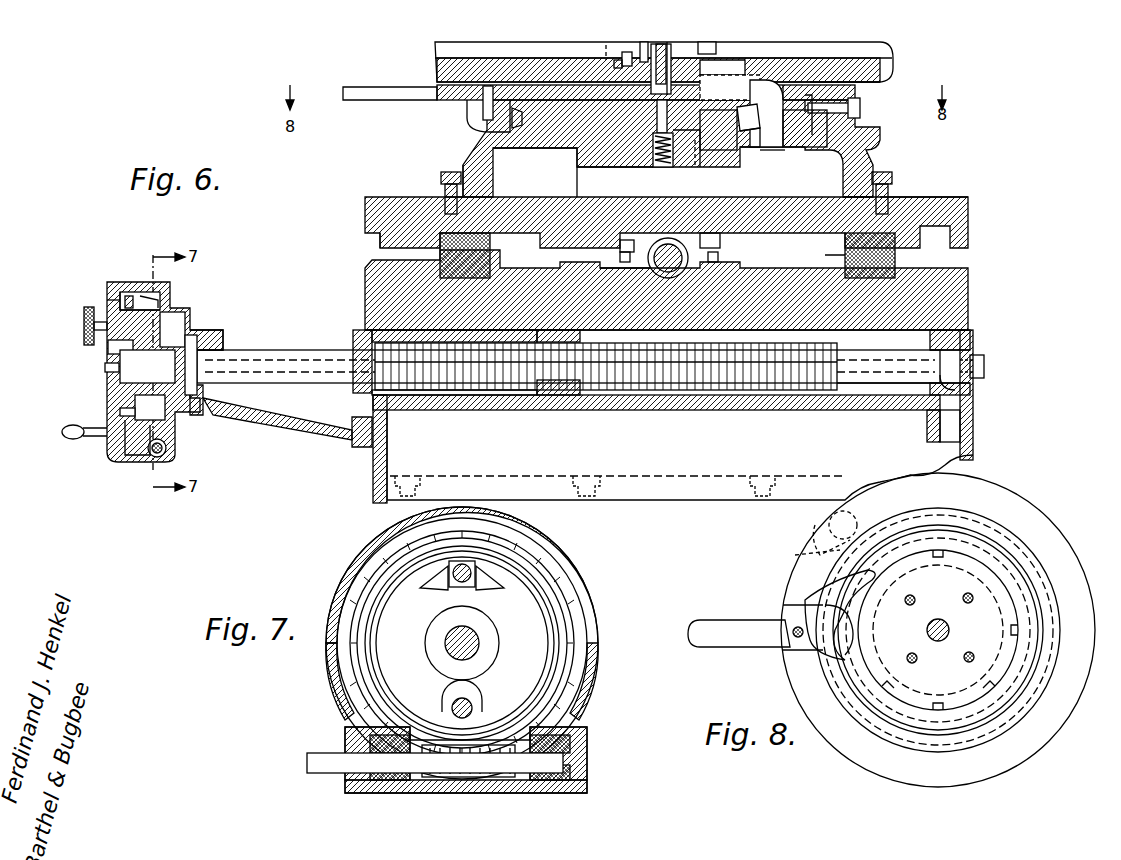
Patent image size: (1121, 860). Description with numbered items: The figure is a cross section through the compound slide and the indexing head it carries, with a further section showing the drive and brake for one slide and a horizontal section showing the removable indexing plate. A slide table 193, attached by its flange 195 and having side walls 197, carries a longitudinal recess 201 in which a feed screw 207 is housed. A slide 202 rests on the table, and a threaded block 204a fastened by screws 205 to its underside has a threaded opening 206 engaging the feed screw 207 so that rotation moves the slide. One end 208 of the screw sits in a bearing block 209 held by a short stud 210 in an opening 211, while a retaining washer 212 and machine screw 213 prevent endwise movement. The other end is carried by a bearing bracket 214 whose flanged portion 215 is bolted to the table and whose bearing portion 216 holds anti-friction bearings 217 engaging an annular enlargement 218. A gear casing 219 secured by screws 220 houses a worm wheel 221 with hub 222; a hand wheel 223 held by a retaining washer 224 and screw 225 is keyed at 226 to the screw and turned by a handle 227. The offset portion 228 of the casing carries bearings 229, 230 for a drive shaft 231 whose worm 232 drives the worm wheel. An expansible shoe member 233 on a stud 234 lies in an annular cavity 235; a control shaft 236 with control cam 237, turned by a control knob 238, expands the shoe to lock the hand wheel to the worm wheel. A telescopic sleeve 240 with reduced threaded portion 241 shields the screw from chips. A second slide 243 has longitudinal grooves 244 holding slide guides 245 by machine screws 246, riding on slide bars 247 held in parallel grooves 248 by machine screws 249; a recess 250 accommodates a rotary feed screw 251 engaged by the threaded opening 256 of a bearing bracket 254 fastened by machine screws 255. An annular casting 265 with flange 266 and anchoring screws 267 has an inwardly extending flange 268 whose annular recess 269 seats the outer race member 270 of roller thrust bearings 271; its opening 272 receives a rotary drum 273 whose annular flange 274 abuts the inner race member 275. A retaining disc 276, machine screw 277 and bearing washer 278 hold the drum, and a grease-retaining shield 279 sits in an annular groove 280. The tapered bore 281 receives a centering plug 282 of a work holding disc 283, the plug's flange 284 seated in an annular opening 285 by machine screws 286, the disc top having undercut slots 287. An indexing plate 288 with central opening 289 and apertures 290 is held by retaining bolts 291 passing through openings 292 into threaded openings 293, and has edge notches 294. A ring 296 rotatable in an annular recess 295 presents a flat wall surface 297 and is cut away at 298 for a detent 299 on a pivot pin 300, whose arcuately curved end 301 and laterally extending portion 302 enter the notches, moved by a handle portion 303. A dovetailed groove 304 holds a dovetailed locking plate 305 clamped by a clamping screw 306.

In FIG. 6, the slide table 193 is at (973, 400).
In FIG. 6, the flange 195 is at (790, 476).
In FIG. 6, the side walls 197 is at (373, 478).
In FIG. 6, the longitudinal recess 201 is at (808, 395).
In FIG. 6, the slide 202 is at (968, 300).
In FIG. 6, the threaded block 204a is at (575, 395).
In FIG. 6, the screws 205 is at (585, 343).
In FIG. 6, the threaded opening 206 is at (550, 395).
In FIG. 6, the feed screw 207 is at (300, 372).
In FIG. 7, the feed screw 207 is at (480, 643).
In FIG. 6, the reduced end 208 is at (955, 392).
In FIG. 6, the bearing block 209 is at (965, 332).
In FIG. 6, the short stud 210 is at (955, 417).
In FIG. 6, the opening 211 is at (973, 434).
In FIG. 6, the retaining washer 212 is at (970, 375).
In FIG. 6, the machine screw 213 is at (985, 360).
In FIG. 6, the bearing bracket 214 is at (282, 425).
In FIG. 6, the flanged portion 215 is at (352, 447).
In FIG. 6, the bearing portion 216 is at (215, 330).
In FIG. 6, the anti-friction bearings 217 is at (205, 340).
In FIG. 6, the annular enlargement 218 is at (205, 415).
In FIG. 6, the gear casing 219 is at (180, 282).
In FIG. 7, the gear casing 219 is at (597, 630).
In FIG. 6, the screws 220 is at (172, 300).
In FIG. 6, the worm wheel 221 is at (135, 292).
In FIG. 7, the worm wheel 221 is at (570, 600).
In FIG. 6, the hub 222 is at (185, 320).
In FIG. 7, the hub 222 is at (435, 660).
In FIG. 6, the hand wheel 223 is at (125, 403).
In FIG. 6, the retaining washer 224 is at (108, 354).
In FIG. 6, the screw 225 is at (105, 368).
In FIG. 6, the key 226 is at (140, 358).
In FIG. 6, the handle 227 is at (75, 440).
In FIG. 6, the offset portion 228 is at (168, 457).
In FIG. 7, the offset portion 228 is at (590, 783).
In FIG. 7, the anti-friction bearing 229 is at (355, 727).
In FIG. 7, the anti-friction bearing 230 is at (590, 741).
In FIG. 7, the drive shaft 231 is at (320, 755).
In FIG. 6, the worm 232 is at (155, 460).
In FIG. 7, the worm 232 is at (490, 760).
In FIG. 6, the expansible shoe member 233 is at (140, 462).
In FIG. 7, the expansible shoe member 233 is at (430, 620).
In FIG. 6, the stud 234 is at (135, 414).
In FIG. 7, the stud 234 is at (455, 704).
In FIG. 6, the annular cavity 235 is at (155, 292).
In FIG. 7, the annular cavity 235 is at (440, 590).
In FIG. 6, the control shaft 236 is at (110, 290).
In FIG. 6, the control cam 237 is at (130, 290).
In FIG. 7, the control cam 237 is at (468, 582).
In FIG. 6, the control knob 238 is at (82, 320).
In FIG. 6, the telescopic sleeve 240 is at (455, 395).
In FIG. 6, the reduced threaded portion 241 is at (353, 340).
In FIG. 6, the slide 243 is at (950, 197).
In FIG. 6, the longitudinal grooves 244 is at (365, 213).
In FIG. 6, the slide guides 245 is at (495, 197).
In FIG. 6, the machine screws 246 is at (440, 197).
In FIG. 6, the slide bars 247 is at (505, 268).
In FIG. 6, the parallel grooves 248 is at (430, 262).
In FIG. 6, the machine screws 249 is at (555, 290).
In FIG. 6, the recess 250 is at (645, 268).
In FIG. 6, the rotary feed screw 251 is at (705, 240).
In FIG. 6, the bearing bracket 254 is at (690, 268).
In FIG. 6, the machine screws 255 is at (620, 258).
In FIG. 6, the threaded opening 256 is at (625, 244).
In FIG. 6, the annular casting 265 is at (460, 165).
In FIG. 6, the flange 266 is at (440, 185).
In FIG. 6, the anchoring screws 267 is at (440, 178).
In FIG. 6, the inwardly extending flange 268 is at (808, 147).
In FIG. 6, the annular recess 269 is at (765, 140).
In FIG. 6, the outer race member 270 is at (760, 150).
In FIG. 6, the roller thrust bearings 271 is at (748, 117).
In FIG. 6, the opening 272 is at (605, 168).
In FIG. 6, the rotary drum 273 is at (722, 170).
In FIG. 6, the annular flange 274 is at (650, 70).
In FIG. 6, the inner race member 275 is at (570, 170).
In FIG. 6, the retaining disc 276 is at (655, 167).
In FIG. 6, the machine screw 277 is at (663, 167).
In FIG. 6, the bearing washer 278 is at (752, 160).
In FIG. 6, the grease-retaining shield 279 is at (770, 80).
In FIG. 8, the grease-retaining shield 279 is at (1020, 570).
In FIG. 6, the annular groove 280 is at (800, 85).
In FIG. 6, the tapered bore 281 is at (718, 60).
In FIG. 6, the centering plug 282 is at (672, 42).
In FIG. 8, the centering plug 282 is at (928, 627).
In FIG. 6, the work holding disc 283 is at (885, 70).
In FIG. 6, the flange 284 is at (627, 45).
In FIG. 6, the annular opening 285 is at (618, 60).
In FIG. 6, the machine screws 286 is at (662, 40).
In FIG. 6, the undercut slots 287 is at (860, 58).
In FIG. 6, the indexing plate 288 is at (740, 70).
In FIG. 8, the indexing plate 288 is at (938, 630).
In FIG. 6, the central opening 289 is at (690, 55).
In FIG. 8, the apertures 290 is at (965, 598).
In FIG. 6, the retaining bolts 291 is at (606, 45).
In FIG. 8, the retaining bolts 291 is at (968, 604).
In FIG. 6, the openings 292 is at (695, 140).
In FIG. 6, the threaded openings 293 is at (706, 167).
In FIG. 8, the notches 294 is at (990, 560).
In FIG. 6, the annular recess 295 is at (870, 128).
In FIG. 6, the ring 296 is at (440, 100).
In FIG. 8, the ring 296 is at (800, 560).
In FIG. 6, the flat wall surface 297 is at (882, 83).
In FIG. 8, the cut away portion 298 is at (795, 605).
In FIG. 8, the detent 299 is at (810, 650).
In FIG. 6, the pivot pin 300 is at (470, 103).
In FIG. 8, the pivot pin 300 is at (795, 630).
In FIG. 6, the arcuately curved end 301 is at (812, 110).
In FIG. 8, the arcuately curved end 301 is at (840, 590).
In FIG. 8, the laterally extending portion 302 is at (880, 575).
In FIG. 6, the handle portion 303 is at (372, 92).
In FIG. 8, the handle portion 303 is at (710, 622).
In FIG. 6, the dovetailed groove 304 is at (468, 128).
In FIG. 8, the dovetailed groove 304 is at (935, 510).
In FIG. 6, the dovetailed locking plate 305 is at (808, 100).
In FIG. 8, the dovetailed locking plate 305 is at (810, 530).
In FIG. 6, the clamping screw 306 is at (860, 109).
In FIG. 8, the clamping screw 306 is at (838, 512).